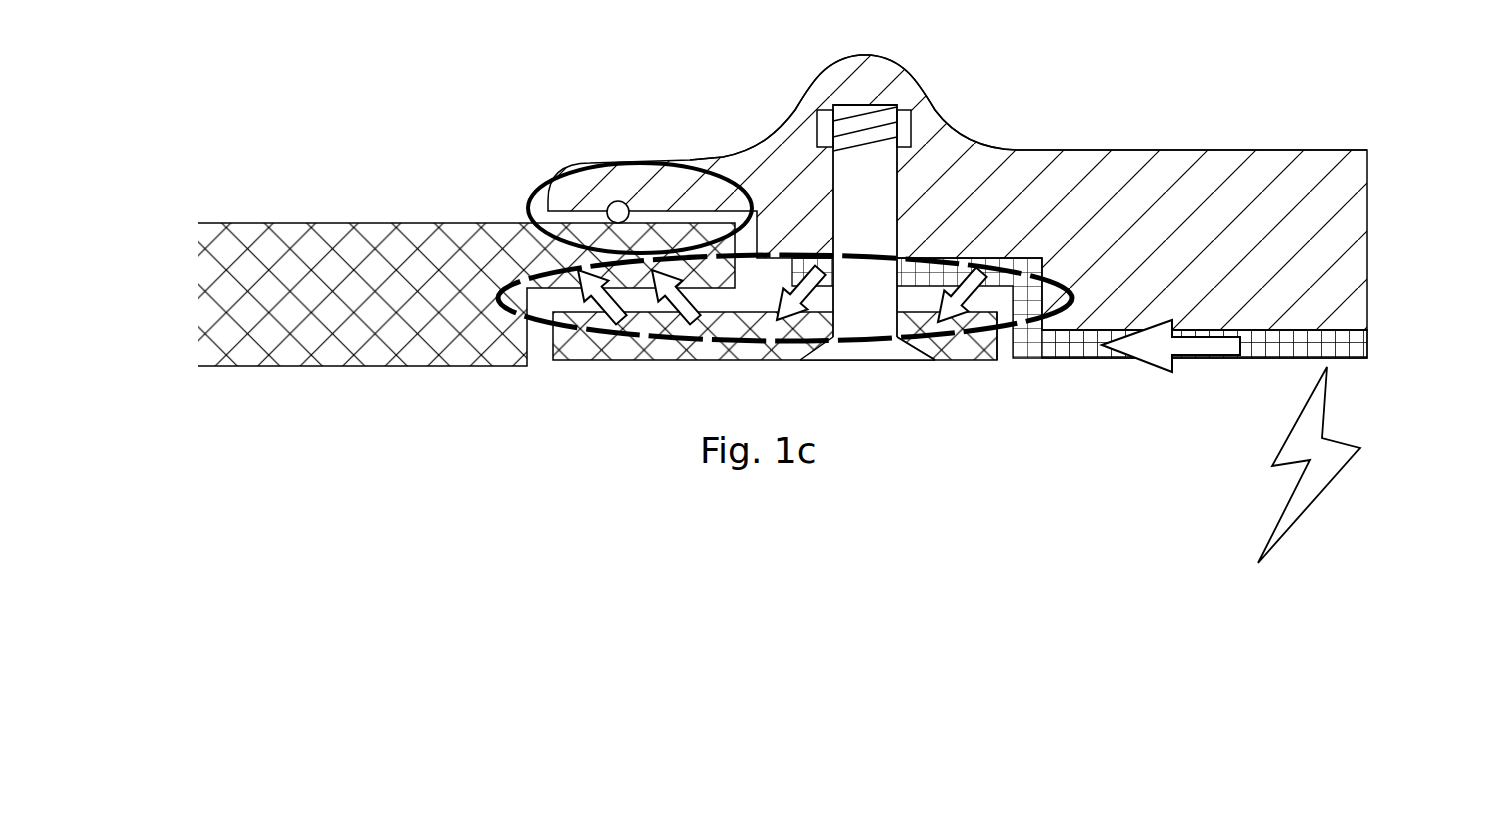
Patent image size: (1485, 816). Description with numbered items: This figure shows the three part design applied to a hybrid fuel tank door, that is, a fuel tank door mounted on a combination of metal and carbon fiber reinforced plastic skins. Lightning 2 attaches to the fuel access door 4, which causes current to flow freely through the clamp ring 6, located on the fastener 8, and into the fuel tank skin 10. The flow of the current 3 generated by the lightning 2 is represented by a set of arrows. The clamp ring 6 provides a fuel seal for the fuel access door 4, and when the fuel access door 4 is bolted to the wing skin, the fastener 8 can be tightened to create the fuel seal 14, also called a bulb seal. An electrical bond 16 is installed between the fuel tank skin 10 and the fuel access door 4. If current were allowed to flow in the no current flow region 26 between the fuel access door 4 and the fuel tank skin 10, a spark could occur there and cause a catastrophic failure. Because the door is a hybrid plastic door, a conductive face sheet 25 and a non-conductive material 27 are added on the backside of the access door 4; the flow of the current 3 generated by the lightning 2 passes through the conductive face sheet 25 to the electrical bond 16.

The lightning 2 is at (1313, 492).
The set of arrows 3 is at (975, 256).
The fuel access door 4 is at (1350, 176).
The clamp ring 6 is at (640, 368).
The fastener 8 is at (876, 233).
The fuel tank skin 10 is at (203, 320).
The fuel seal 14 is at (603, 199).
The electrical bond 16 is at (978, 345).
The conductive face sheet 25 is at (1376, 336).
The no current flow region 26 is at (654, 155).
The non-conductive material 27 is at (1036, 148).